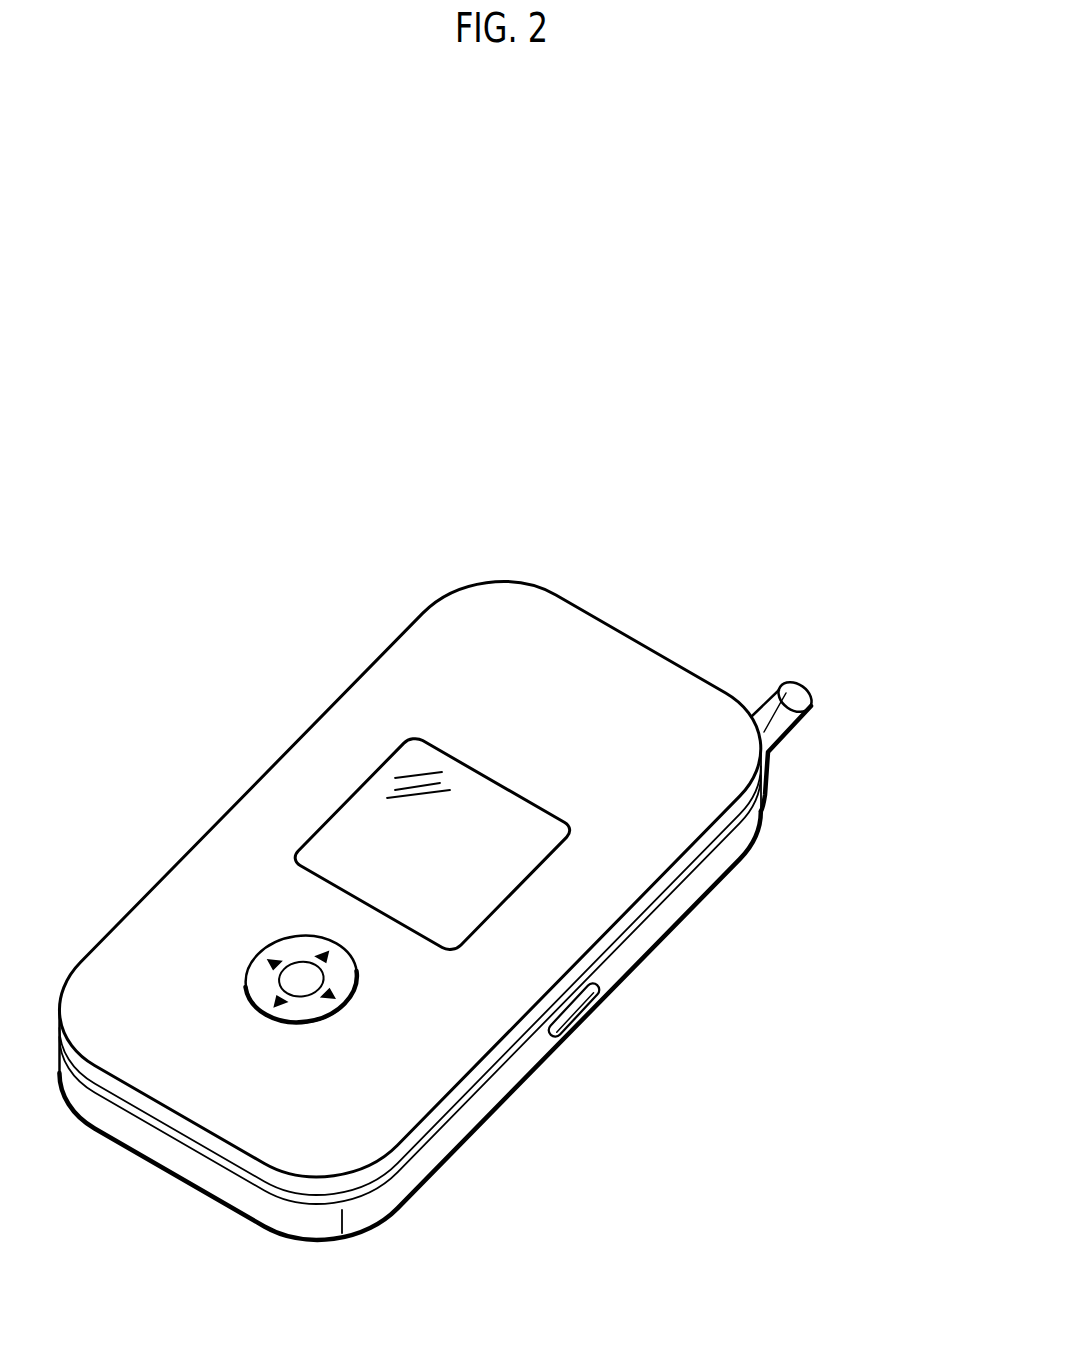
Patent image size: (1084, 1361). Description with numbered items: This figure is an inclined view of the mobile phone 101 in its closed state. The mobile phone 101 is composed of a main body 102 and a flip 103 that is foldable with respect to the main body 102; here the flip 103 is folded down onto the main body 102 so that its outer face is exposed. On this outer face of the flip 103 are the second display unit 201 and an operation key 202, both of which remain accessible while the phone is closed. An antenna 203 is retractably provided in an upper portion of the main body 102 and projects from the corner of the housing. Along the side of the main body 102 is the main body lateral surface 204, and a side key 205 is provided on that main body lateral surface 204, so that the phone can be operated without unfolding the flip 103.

The mobile phone 101 is at (553, 528).
The main body 102 is at (250, 1202).
The flip 103 is at (613, 645).
The second display unit 201 is at (375, 768).
The operation key 202 is at (283, 937).
The antenna 203 is at (801, 689).
The main body lateral surface 204 is at (670, 928).
The side key 205 is at (598, 1006).